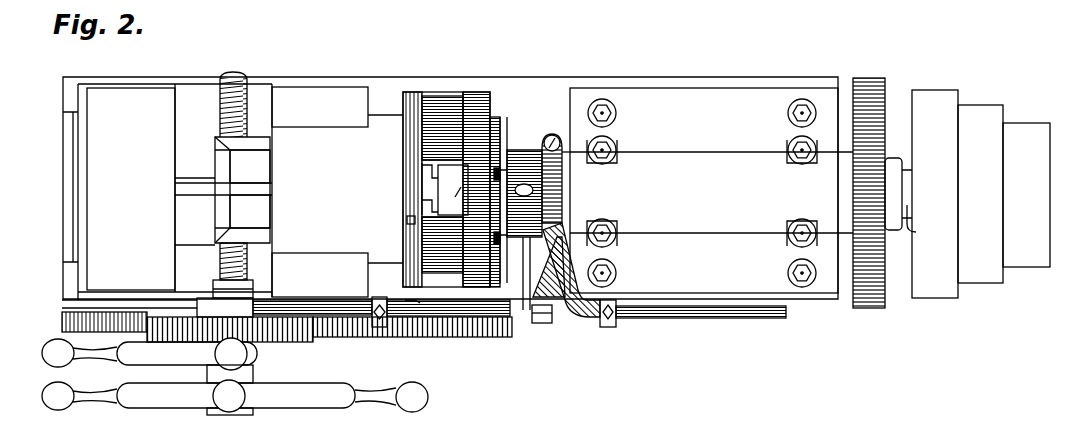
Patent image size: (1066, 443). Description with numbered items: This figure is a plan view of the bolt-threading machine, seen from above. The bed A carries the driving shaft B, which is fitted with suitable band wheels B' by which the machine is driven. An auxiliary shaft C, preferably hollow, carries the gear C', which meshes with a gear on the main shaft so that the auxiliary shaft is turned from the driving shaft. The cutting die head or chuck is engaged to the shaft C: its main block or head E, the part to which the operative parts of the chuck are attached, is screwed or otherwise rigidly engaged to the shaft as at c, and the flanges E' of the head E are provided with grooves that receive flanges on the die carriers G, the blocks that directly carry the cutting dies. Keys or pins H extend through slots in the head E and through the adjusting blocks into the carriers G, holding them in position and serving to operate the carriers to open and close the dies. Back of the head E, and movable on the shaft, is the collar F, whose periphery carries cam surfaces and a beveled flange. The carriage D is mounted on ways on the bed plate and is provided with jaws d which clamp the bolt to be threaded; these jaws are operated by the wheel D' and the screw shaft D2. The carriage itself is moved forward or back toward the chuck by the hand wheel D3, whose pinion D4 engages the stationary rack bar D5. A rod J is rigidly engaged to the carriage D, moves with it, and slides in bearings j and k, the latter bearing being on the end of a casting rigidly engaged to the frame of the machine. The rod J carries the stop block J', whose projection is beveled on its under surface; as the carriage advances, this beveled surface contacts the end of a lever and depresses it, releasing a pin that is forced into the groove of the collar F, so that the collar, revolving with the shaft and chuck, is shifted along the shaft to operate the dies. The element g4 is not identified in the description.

The bed A is at (450, 188).
The driving shaft B is at (752, 190).
The band wheels B' is at (981, 194).
The auxiliary shaft C is at (567, 225).
The gear C' is at (861, 205).
The engagement of head to shaft c is at (893, 163).
The carriage D is at (223, 189).
The jaws d is at (250, 189).
The wheel D' is at (235, 386).
The screw shaft D2 is at (246, 80).
The hand wheel D3 is at (149, 354).
The pinion D4 is at (248, 380).
The stationary rack bar D5 is at (433, 330).
The main block or head of the chuck E is at (455, 170).
The flanges E' is at (457, 186).
The collar F is at (508, 150).
The die carriers G is at (424, 189).
The stud g4 is at (412, 220).
The keys or pins H is at (498, 250).
The rod J is at (693, 328).
The stop block J' is at (381, 301).
The bearing j is at (415, 295).
The bearing k is at (548, 324).